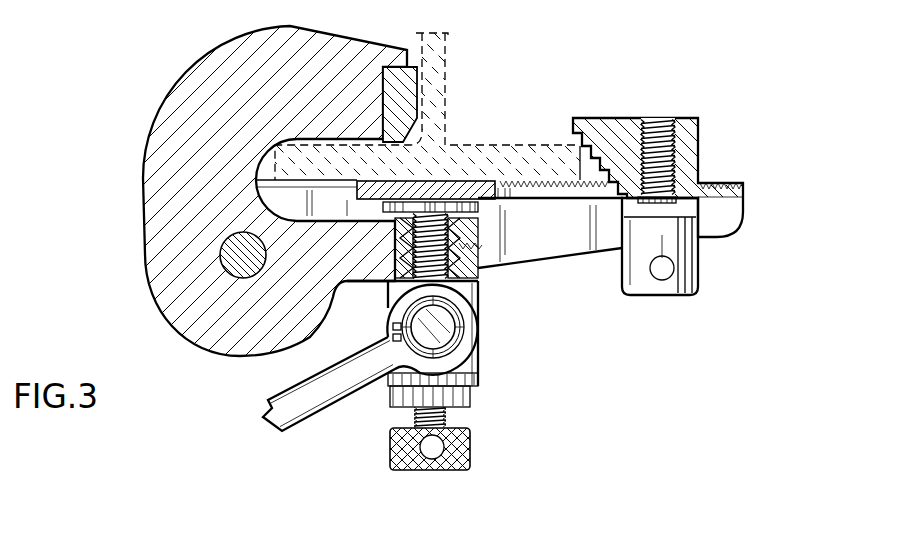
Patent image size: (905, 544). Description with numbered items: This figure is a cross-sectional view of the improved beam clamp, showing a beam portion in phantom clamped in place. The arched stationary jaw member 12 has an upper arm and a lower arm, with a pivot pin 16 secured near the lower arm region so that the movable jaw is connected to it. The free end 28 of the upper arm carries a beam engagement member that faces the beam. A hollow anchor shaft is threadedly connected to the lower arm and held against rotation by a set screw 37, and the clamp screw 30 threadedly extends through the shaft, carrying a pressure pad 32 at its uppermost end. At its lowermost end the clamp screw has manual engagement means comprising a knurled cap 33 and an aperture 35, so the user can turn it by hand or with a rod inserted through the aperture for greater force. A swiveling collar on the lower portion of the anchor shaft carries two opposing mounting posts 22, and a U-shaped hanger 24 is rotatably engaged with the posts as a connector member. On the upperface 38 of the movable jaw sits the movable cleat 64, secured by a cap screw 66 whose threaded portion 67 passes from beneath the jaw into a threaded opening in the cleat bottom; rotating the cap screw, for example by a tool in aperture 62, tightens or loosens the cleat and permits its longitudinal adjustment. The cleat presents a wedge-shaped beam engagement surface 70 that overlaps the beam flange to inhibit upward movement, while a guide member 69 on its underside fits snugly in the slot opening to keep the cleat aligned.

The stationary jaw member 12 is at (177, 113).
The pivot pin 16 is at (221, 252).
The mounting posts 22 is at (447, 327).
The U-shaped hanger 24 is at (328, 395).
The free end 28 is at (410, 52).
The clamp screw 30 is at (386, 292).
The pressure pad 32 is at (475, 205).
The knurled cap 33 is at (472, 437).
The aperture 35 is at (432, 450).
The set screw 37 is at (478, 255).
The upperface 38 is at (523, 178).
The aperture 62 is at (662, 276).
The movable cleat 64 is at (700, 120).
The cap screw 66 is at (696, 276).
The threaded portion 67 is at (670, 148).
The guide member 69 is at (620, 192).
The beam engagement surface 70 is at (580, 150).